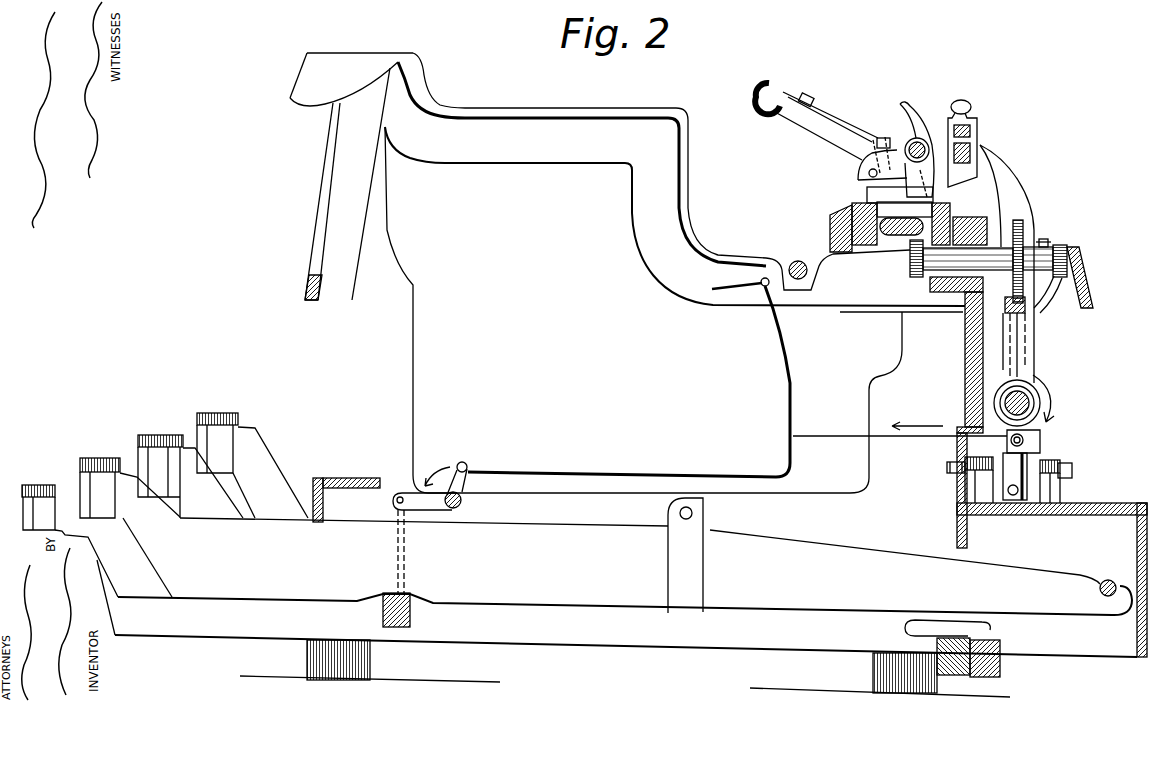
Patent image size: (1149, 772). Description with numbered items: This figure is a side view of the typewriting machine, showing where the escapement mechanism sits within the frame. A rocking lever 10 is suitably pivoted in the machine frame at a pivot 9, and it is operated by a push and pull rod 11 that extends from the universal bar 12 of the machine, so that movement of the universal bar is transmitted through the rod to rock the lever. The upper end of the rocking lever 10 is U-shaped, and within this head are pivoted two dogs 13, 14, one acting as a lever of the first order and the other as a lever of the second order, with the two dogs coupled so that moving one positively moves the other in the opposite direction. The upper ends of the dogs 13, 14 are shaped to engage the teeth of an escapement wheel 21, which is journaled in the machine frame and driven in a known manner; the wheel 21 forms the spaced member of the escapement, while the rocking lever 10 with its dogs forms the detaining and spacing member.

The pivot 9 is at (1035, 410).
The rocking lever 10 is at (1023, 462).
The push and pull rod 11 is at (824, 435).
The universal bar 12 is at (412, 616).
The dog 13 is at (1000, 311).
The dog 14 is at (1042, 314).
The escapement wheel 21 is at (1023, 228).